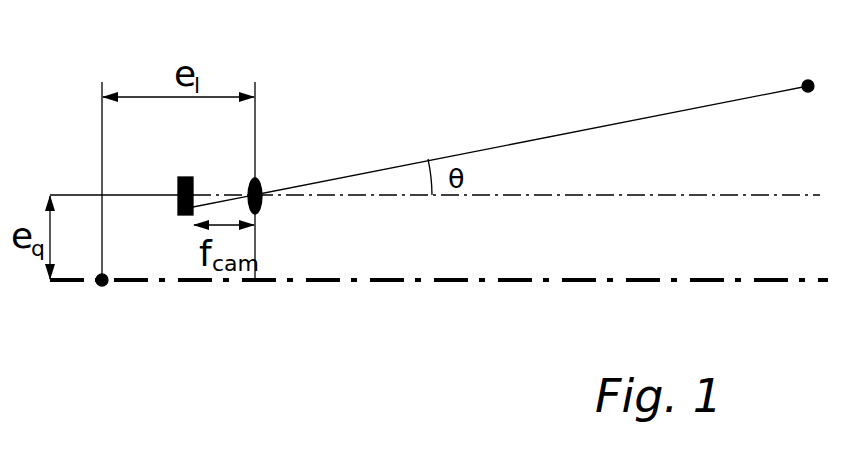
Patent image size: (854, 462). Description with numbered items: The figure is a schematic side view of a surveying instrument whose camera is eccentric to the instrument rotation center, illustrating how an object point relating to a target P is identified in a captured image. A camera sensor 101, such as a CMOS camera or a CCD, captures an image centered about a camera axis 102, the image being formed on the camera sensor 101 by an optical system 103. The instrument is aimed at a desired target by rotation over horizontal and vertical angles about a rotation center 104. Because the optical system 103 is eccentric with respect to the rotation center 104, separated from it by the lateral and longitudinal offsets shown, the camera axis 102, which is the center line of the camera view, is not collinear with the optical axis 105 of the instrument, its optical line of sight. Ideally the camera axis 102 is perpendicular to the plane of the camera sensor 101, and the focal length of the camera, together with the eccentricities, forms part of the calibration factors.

The camera sensor 101 is at (182, 177).
The camera axis 102 is at (400, 197).
The optical system 103 is at (258, 178).
The rotation center 104 is at (107, 283).
The optical axis 105 is at (335, 283).
The target P is at (809, 92).